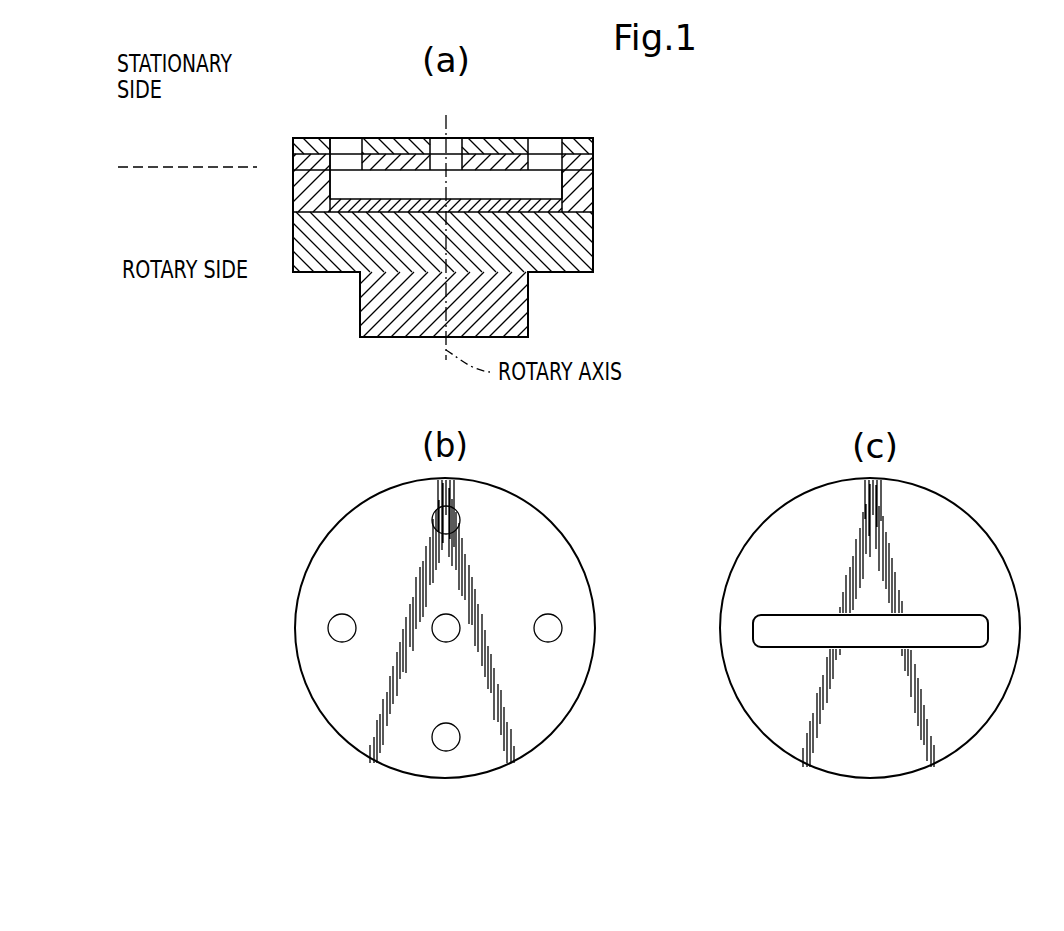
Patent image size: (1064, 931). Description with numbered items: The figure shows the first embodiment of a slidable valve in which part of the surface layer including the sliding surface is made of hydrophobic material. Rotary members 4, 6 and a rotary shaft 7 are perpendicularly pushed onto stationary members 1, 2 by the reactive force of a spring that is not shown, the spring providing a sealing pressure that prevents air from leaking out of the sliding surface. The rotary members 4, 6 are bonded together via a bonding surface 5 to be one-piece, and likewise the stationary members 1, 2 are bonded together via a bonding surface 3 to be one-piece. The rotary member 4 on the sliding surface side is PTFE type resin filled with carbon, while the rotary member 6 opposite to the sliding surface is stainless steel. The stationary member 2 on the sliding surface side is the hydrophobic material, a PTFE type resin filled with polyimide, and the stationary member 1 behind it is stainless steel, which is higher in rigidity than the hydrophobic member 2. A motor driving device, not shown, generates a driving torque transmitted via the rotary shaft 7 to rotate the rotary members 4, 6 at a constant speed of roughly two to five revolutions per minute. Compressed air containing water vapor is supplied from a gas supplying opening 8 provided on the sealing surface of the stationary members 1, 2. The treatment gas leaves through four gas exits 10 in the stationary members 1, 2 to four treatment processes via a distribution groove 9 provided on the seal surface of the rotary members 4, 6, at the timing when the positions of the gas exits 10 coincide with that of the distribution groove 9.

The stationary member 1 is at (590, 147).
The stationary member 2 is at (583, 167).
The bonding surface 3 is at (292, 152).
The rotary member 4 is at (577, 193).
The bonding surface 5 is at (292, 212).
The rotary member 6 is at (580, 247).
The rotary shaft 7 is at (510, 300).
The gas supplying opening 8 is at (449, 140).
The distribution groove 9 is at (342, 182).
The gas exit 10 is at (349, 143).